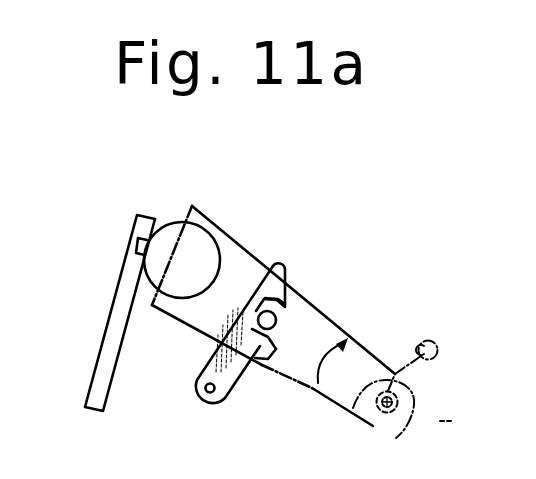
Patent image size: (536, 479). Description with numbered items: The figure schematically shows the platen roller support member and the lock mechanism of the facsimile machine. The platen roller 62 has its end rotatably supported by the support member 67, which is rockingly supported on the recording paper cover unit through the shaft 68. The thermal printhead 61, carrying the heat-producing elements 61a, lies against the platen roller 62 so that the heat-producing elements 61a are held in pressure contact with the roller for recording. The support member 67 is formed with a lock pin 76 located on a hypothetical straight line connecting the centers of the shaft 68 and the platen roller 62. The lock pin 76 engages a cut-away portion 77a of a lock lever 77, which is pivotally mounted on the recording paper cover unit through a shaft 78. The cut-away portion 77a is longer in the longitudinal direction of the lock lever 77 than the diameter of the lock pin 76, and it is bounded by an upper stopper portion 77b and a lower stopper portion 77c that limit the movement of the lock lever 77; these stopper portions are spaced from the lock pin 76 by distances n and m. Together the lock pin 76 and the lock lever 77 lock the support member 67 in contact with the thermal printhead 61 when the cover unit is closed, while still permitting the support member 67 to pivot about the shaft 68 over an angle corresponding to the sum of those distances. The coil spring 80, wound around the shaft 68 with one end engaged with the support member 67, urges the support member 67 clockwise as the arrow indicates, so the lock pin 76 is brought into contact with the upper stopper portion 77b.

The thermal printhead 61 is at (137, 216).
The heat-producing elements 61a is at (139, 248).
The platen roller 62 is at (176, 222).
The support member 67 is at (228, 231).
The shaft 68 is at (399, 423).
The lock pin 76 is at (277, 322).
The lock lever 77 is at (279, 261).
The cut-away portion 77a is at (222, 338).
The upper stopper portion 77b is at (288, 282).
The lower stopper portion 77c is at (274, 352).
The shaft 78 is at (205, 388).
The coil spring 80 is at (353, 408).